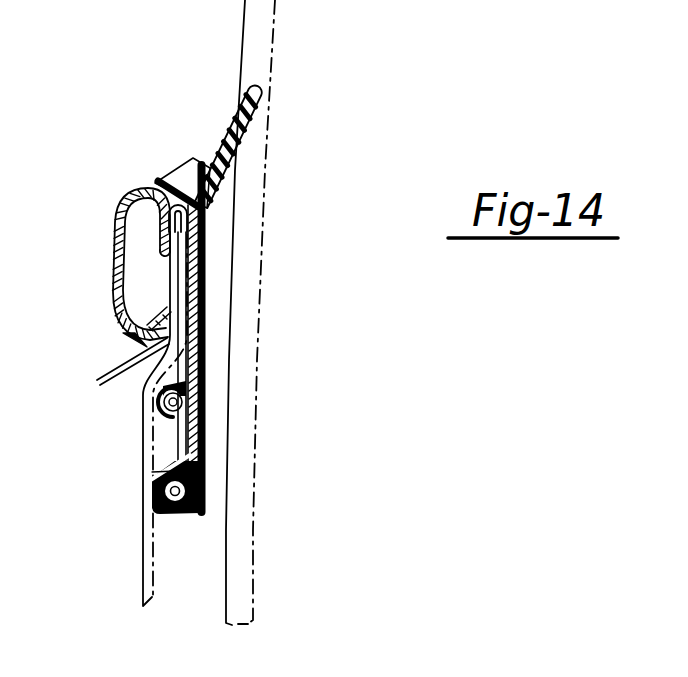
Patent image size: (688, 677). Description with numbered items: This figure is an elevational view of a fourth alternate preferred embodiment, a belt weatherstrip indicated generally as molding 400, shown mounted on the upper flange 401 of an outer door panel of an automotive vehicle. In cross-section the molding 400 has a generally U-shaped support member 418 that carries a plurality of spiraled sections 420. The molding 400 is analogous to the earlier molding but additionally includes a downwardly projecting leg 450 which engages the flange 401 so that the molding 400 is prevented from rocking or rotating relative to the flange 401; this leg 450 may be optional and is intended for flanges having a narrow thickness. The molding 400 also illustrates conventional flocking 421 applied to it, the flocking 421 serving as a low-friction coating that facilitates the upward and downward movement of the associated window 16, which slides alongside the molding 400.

The window 16 is at (243, 519).
The molding 400 is at (96, 292).
The upper flange 401 is at (206, 231).
The support member 418 is at (180, 454).
The spiraled sections 420 is at (205, 397).
The flocking 421 is at (266, 114).
The downwardly projecting leg 450 is at (128, 232).